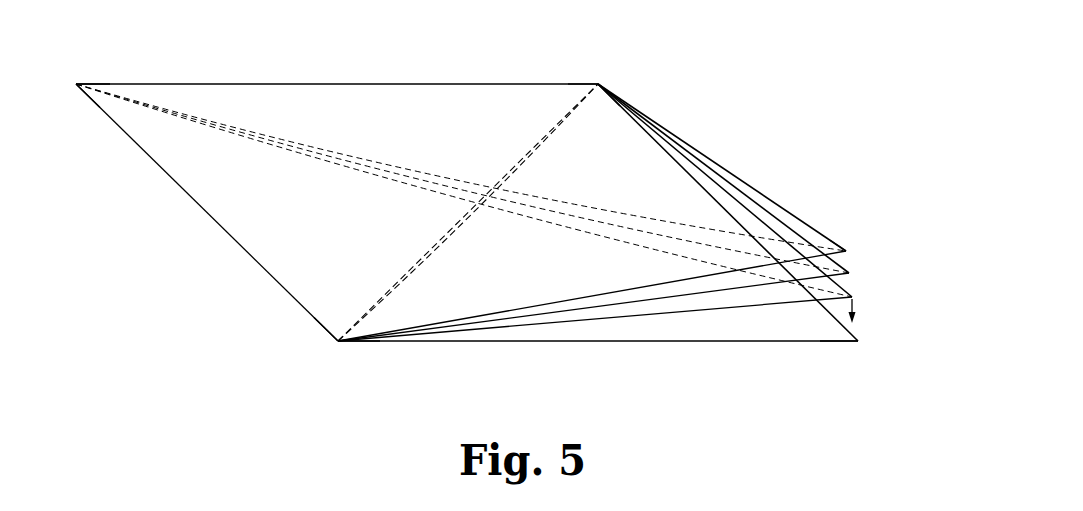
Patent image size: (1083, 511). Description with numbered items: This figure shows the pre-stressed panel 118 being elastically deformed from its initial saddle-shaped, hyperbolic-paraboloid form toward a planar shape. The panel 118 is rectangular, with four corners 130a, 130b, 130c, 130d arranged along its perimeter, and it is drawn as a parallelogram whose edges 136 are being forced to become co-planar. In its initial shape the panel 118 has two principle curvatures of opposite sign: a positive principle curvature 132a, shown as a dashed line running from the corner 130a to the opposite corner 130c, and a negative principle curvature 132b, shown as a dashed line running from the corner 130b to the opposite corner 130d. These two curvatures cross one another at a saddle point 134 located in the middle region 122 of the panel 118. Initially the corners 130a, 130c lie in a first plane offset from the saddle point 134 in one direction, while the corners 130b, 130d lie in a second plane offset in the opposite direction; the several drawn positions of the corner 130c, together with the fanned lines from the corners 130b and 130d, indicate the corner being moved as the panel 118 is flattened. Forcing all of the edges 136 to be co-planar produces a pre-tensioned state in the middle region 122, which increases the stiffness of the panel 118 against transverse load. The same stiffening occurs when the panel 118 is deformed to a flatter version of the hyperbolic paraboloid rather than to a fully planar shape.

The panel 118 is at (794, 81).
The middle region 122 is at (592, 189).
The corner 130a is at (76, 84).
The corner 130b is at (598, 84).
The corner 130c is at (846, 251).
The corner 130d is at (338, 341).
The positive principle curvature 132a is at (206, 124).
The negative principle curvature 132b is at (542, 124).
The saddle point 134 is at (467, 192).
The edges 136 is at (363, 84).